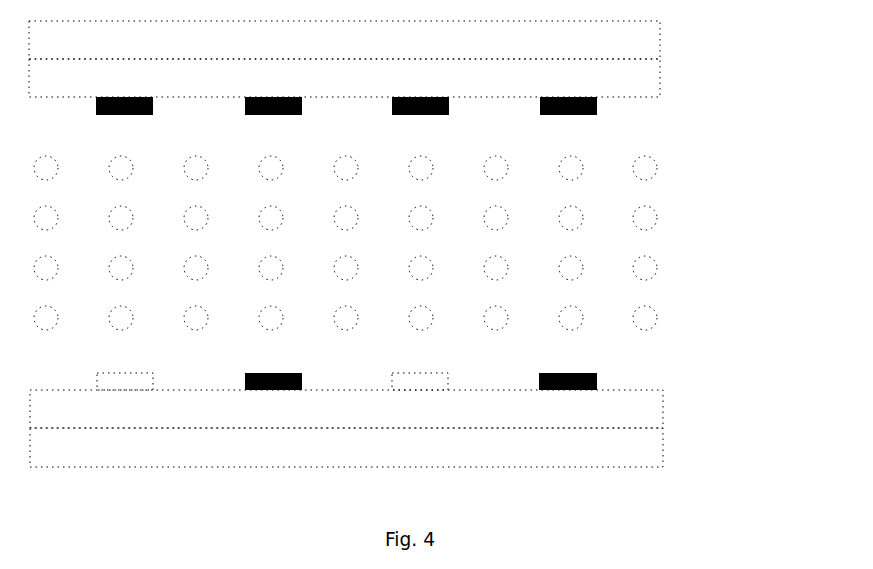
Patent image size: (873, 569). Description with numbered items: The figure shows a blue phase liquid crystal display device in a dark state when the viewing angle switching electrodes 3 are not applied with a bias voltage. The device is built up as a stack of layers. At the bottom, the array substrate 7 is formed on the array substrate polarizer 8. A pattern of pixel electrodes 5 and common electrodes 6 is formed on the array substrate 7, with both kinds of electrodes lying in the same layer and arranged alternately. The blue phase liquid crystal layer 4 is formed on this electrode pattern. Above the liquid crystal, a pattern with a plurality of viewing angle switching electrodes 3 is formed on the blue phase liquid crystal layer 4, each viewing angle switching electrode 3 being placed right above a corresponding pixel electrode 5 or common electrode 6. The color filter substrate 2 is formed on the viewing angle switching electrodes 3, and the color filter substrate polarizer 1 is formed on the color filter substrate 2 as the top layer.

The color filter substrate polarizer 1 is at (660, 43).
The color filter substrate 2 is at (660, 75).
The viewing angle switching electrodes 3 is at (597, 104).
The blue phase liquid crystal layer 4 is at (636, 244).
The pixel electrodes 5 is at (448, 381).
The common electrodes 6 is at (597, 374).
The array substrate 7 is at (663, 408).
The array substrate polarizer 8 is at (663, 450).